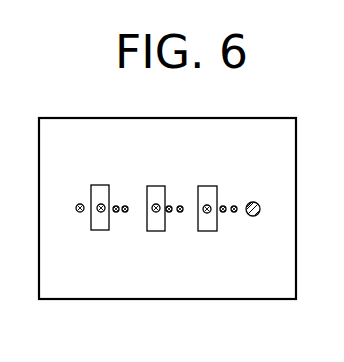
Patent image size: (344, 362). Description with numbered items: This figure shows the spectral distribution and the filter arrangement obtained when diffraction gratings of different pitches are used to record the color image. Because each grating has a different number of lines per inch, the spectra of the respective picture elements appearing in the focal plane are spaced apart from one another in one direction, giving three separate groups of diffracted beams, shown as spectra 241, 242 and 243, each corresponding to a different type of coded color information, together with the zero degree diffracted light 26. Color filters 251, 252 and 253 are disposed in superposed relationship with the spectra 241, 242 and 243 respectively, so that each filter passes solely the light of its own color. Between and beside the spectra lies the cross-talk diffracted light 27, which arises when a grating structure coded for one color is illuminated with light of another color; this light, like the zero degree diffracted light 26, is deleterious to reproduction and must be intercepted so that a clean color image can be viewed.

The spectrum 241 is at (100, 204).
The spectrum 242 is at (156, 204).
The spectrum 243 is at (207, 205).
The color filter 251 is at (97, 230).
The color filter 252 is at (156, 231).
The color filter 253 is at (209, 231).
The zero degree diffracted light 26 is at (257, 216).
The cross-talk diffracted light 27 is at (78, 206).